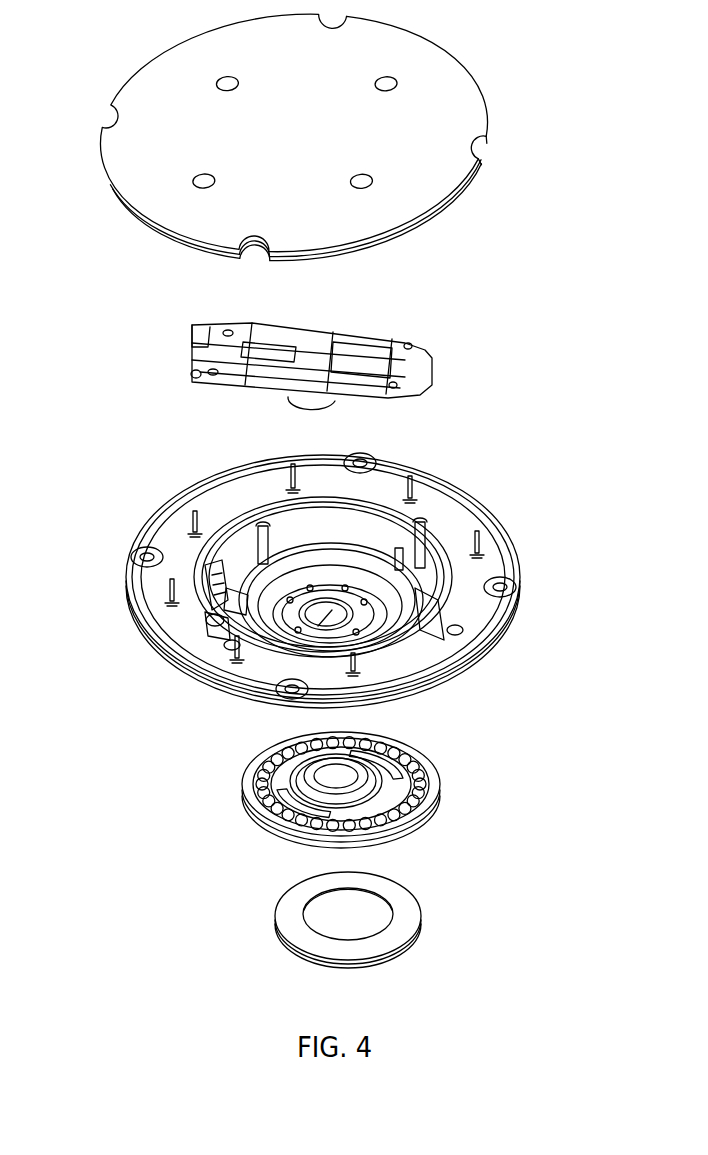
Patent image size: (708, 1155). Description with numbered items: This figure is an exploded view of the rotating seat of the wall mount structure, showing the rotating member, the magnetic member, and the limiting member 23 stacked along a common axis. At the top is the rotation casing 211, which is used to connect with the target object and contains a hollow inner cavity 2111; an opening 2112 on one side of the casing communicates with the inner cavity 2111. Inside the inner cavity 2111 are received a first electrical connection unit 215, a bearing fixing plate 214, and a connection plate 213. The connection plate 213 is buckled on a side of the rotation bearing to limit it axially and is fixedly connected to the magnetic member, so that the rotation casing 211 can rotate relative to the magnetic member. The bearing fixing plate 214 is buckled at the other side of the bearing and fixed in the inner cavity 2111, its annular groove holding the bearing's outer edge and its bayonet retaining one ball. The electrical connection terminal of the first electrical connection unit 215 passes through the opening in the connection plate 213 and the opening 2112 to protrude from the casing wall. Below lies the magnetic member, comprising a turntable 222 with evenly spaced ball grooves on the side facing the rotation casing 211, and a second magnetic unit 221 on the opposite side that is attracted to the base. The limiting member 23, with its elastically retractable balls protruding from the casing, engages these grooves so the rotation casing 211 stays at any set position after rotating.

The rotation casing 211 is at (443, 517).
The inner cavity 2111 is at (307, 552).
The opening 2112 is at (300, 660).
The connection plate 213 is at (440, 615).
The bearing fixing plate 214 is at (200, 573).
The first electrical connection unit 215 is at (413, 340).
The second magnetic unit 221 is at (413, 918).
The turntable 222 is at (422, 825).
The limiting member 23 is at (203, 622).